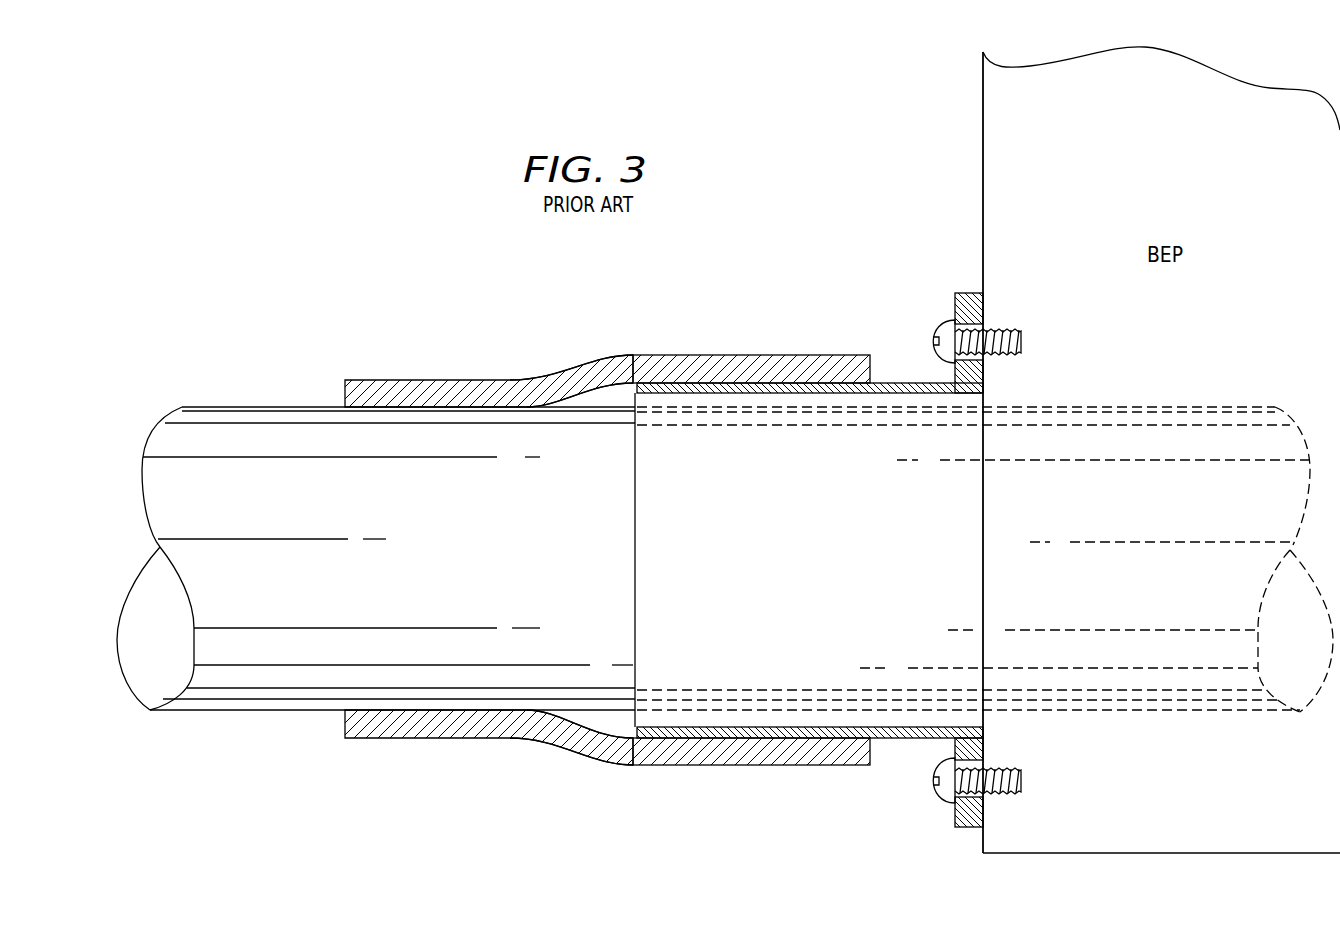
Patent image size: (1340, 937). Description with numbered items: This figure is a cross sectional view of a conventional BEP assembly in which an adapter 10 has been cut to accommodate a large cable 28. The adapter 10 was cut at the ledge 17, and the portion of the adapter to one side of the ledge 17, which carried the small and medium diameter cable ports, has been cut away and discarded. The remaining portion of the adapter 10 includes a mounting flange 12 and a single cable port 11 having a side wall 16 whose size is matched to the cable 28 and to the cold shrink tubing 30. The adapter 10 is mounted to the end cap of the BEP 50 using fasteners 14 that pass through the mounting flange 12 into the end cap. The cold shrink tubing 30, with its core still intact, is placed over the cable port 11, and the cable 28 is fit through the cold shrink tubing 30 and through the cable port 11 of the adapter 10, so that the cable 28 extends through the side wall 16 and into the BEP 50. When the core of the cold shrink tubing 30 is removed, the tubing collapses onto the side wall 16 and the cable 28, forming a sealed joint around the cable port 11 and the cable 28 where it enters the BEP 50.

The adapter 10 is at (903, 748).
The cable port 11 is at (750, 378).
The mounting flange 12 is at (955, 304).
The fasteners 14 is at (933, 327).
The side wall 16 is at (900, 383).
The ledge 17 is at (653, 383).
The cable 28 is at (228, 405).
The cold shrink tubing 30 is at (430, 380).
The BEP 50 is at (985, 115).